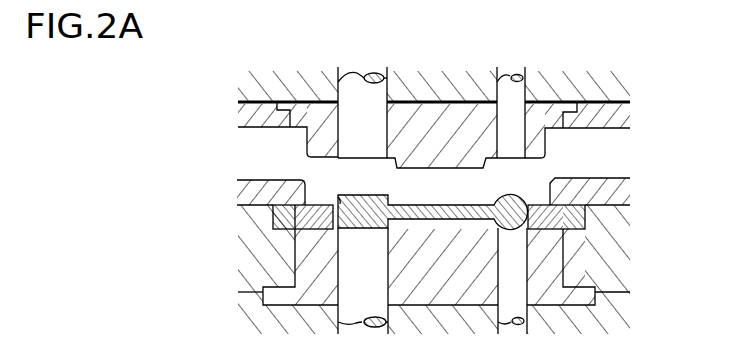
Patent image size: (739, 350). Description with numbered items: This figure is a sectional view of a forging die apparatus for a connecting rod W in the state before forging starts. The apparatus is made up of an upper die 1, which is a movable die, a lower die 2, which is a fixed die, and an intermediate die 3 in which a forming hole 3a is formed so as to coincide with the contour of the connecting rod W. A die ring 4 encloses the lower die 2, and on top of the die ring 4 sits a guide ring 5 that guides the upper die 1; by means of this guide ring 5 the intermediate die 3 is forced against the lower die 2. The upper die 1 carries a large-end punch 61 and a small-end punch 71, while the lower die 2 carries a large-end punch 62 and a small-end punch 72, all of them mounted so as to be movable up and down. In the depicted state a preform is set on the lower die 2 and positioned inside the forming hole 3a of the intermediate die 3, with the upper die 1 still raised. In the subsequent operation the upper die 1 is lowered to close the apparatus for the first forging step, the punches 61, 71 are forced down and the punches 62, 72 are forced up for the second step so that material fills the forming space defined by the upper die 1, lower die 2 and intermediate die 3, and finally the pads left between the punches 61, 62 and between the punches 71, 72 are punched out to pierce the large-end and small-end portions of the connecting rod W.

The upper die 1 is at (540, 143).
The lower die 2 is at (552, 262).
The intermediate die 3 is at (313, 218).
The forming hole 3a is at (340, 197).
The die ring 4 is at (593, 242).
The guide ring 5 is at (583, 192).
The large-end punch 61 is at (350, 87).
The large-end punch 62 is at (357, 277).
The small-end punch 71 is at (518, 90).
The small-end punch 72 is at (518, 290).
The connecting rod W is at (477, 203).